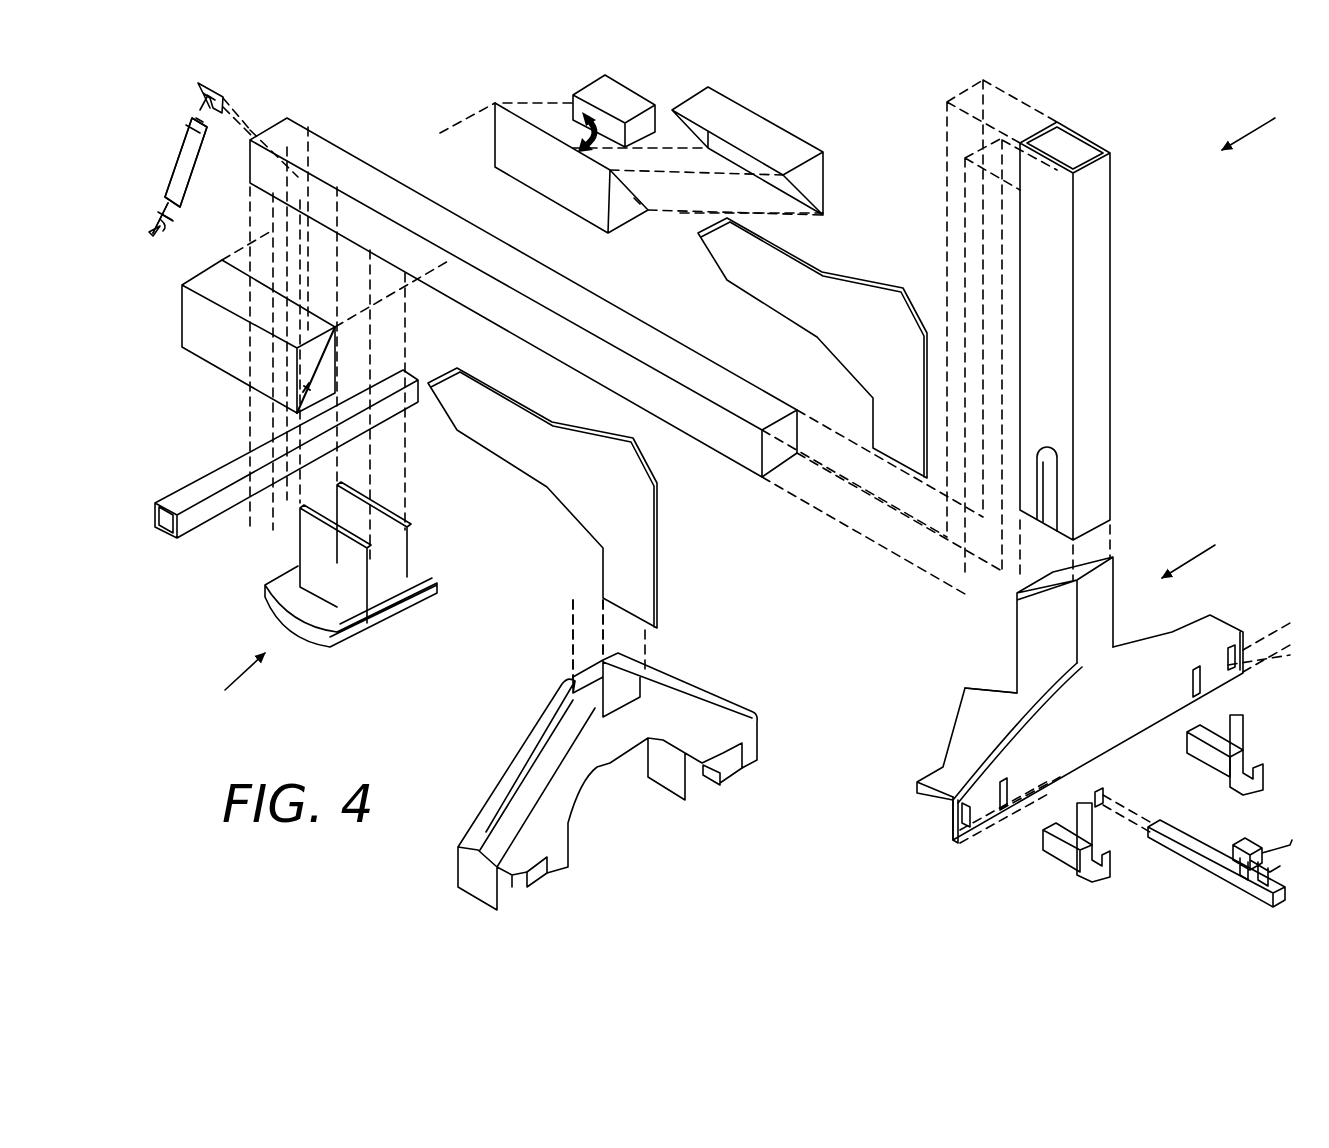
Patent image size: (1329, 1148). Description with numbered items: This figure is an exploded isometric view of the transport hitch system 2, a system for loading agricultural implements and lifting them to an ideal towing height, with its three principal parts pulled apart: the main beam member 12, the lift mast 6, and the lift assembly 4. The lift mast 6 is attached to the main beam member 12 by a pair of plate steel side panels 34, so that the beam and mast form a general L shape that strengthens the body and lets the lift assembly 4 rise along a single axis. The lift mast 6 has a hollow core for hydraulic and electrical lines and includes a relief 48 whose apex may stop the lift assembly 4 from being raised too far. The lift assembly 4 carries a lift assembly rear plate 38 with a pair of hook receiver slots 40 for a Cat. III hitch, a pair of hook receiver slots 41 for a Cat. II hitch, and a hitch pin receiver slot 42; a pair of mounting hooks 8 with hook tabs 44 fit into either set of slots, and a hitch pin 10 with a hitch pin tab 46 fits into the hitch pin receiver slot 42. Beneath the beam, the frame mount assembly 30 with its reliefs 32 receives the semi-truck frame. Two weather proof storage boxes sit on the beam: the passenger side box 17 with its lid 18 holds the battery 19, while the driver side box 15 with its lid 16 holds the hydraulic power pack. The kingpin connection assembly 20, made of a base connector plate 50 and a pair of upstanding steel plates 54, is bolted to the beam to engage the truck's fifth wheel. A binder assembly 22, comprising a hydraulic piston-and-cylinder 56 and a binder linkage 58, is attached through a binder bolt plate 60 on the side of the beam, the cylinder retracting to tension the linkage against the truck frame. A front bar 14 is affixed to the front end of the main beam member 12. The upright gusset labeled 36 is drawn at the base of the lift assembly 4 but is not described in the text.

The transport hitch system 2 is at (1257, 123).
The lift assembly 4 is at (1197, 551).
The lift mast 6 is at (1112, 205).
The mounting hooks 8 is at (1245, 753).
The hitch pin 10 is at (1243, 847).
The main beam member 12 is at (557, 283).
The front bar 14 is at (233, 472).
The driver side box 15 is at (327, 363).
The weather proof lid 16 is at (268, 302).
The passenger side box 17 is at (533, 167).
The weather proof lid 18 is at (777, 147).
The battery 19 is at (573, 98).
The kingpin connection assembly 20 is at (227, 681).
The binder assemblies 22 is at (168, 138).
The frame mount assembly 30 is at (560, 812).
The reliefs 32 is at (723, 773).
The side panels 34 is at (638, 507).
The upright gusset 36 is at (1050, 576).
The lift assembly rear plate 38 is at (1130, 727).
The hook receiver slots 40 is at (1240, 648).
The hook receiver slots 41 is at (1193, 674).
The hitch pin receiver slot 42 is at (1100, 797).
The hook tabs 44 is at (1217, 770).
The hitch pin tab 46 is at (1187, 857).
The relief 48 is at (1043, 467).
The base connector plate 50 is at (297, 640).
The upstanding steel plates 54 is at (337, 490).
The hydraulic piston-and-cylinder 56 is at (233, 180).
The binder linkage 58 is at (167, 218).
The binder bolt plate 60 is at (223, 96).